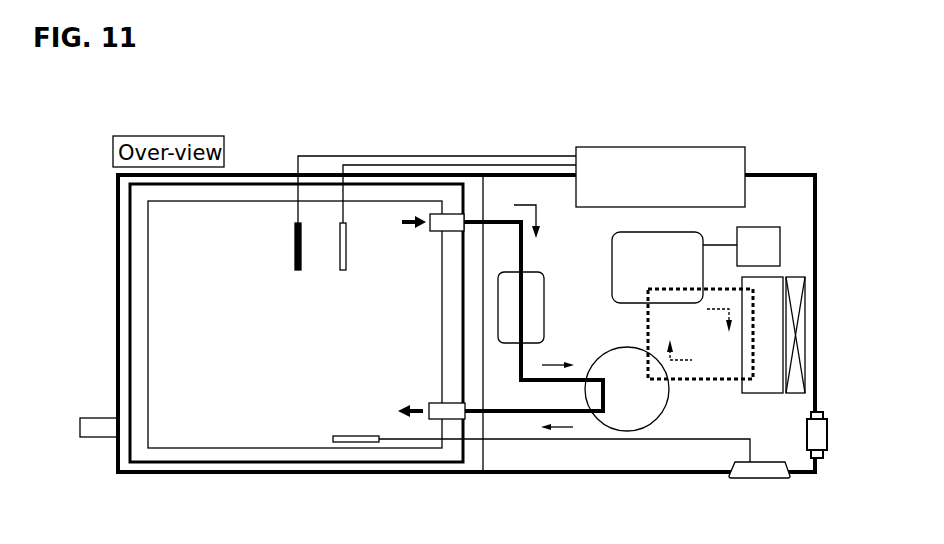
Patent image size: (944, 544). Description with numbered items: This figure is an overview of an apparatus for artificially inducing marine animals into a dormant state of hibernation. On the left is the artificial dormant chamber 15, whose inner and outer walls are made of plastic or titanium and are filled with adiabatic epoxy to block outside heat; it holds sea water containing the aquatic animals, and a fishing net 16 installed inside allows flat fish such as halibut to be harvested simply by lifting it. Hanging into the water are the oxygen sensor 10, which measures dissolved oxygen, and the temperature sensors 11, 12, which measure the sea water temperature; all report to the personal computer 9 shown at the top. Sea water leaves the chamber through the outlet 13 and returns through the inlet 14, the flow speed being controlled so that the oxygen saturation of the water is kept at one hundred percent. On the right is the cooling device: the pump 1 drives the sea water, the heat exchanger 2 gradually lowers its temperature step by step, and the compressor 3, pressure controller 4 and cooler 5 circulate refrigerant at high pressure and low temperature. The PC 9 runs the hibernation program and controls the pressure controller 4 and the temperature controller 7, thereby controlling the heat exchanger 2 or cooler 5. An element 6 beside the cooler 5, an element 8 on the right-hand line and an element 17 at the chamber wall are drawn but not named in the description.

The pump 1 is at (545, 313).
The heat exchanger 2 is at (619, 402).
The compressor 3 is at (612, 262).
The pressure controller 4 is at (760, 227).
The cooler 5 is at (768, 393).
The fan 6 is at (805, 318).
The temperature controller 7 is at (770, 478).
The dryer 8 is at (827, 432).
The personal computer 9 is at (646, 189).
The oxygen sensor 10 is at (298, 270).
The temperature sensor 11 is at (343, 270).
The temperature sensor 12 is at (357, 436).
The outlet 13 is at (436, 232).
The inlet 14 is at (433, 403).
The artificial dormant chamber 15 is at (310, 363).
The fishing net 16 is at (150, 430).
The connector 17 is at (95, 418).